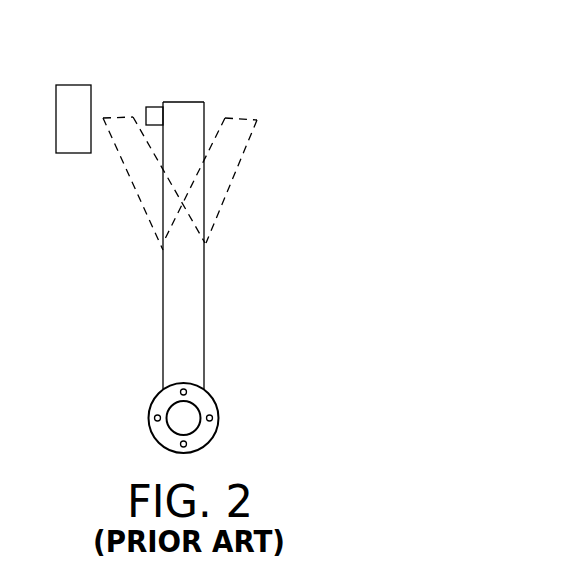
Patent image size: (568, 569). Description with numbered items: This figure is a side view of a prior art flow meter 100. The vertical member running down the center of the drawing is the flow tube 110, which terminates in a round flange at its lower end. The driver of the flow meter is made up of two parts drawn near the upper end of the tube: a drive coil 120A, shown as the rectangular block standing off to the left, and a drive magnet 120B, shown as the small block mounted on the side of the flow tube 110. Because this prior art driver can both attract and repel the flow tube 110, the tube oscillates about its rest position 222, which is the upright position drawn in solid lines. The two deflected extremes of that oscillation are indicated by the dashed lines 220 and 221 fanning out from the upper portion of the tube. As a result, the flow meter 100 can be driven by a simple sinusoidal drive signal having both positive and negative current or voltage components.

The prior art flow meter 100 is at (424, 69).
The flow tube 110 is at (205, 308).
The drive coil 120A is at (73, 84).
The drive magnet 120B is at (158, 107).
The dashed line 220 is at (120, 118).
The dashed line 221 is at (247, 118).
The rest position 222 is at (205, 102).